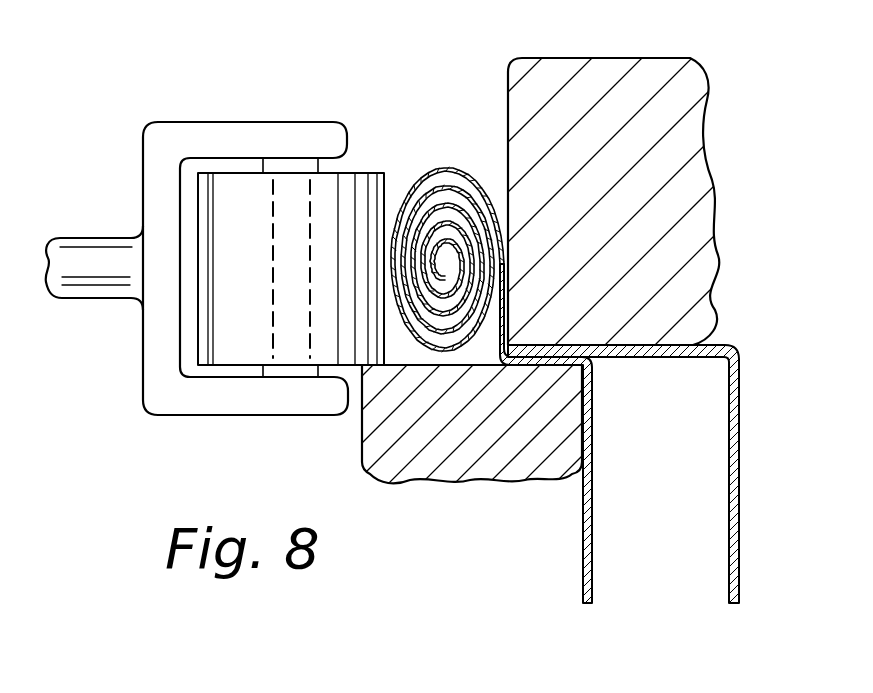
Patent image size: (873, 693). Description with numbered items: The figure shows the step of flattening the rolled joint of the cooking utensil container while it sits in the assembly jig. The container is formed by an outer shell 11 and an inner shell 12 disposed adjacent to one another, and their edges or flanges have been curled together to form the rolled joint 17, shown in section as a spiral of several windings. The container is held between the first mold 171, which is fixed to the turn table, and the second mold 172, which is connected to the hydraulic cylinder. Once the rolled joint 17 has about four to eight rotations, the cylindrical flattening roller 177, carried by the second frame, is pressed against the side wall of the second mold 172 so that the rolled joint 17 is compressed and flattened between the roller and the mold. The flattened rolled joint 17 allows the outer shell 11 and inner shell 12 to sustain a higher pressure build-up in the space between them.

The flatening roller 177 is at (327, 192).
The rolled joint 17 is at (445, 163).
The second mold 172 is at (687, 182).
The first mold 171 is at (470, 488).
The outer shell 11 is at (595, 441).
The inner shell 12 is at (742, 414).